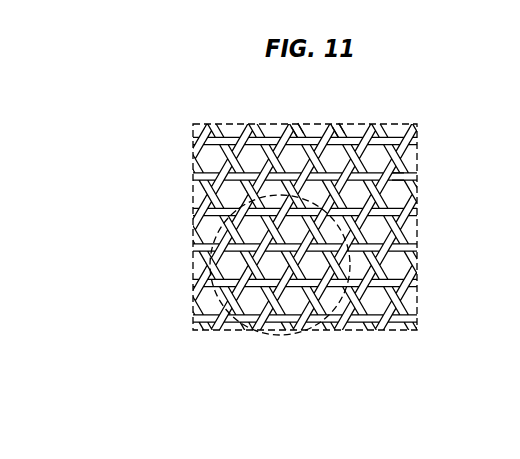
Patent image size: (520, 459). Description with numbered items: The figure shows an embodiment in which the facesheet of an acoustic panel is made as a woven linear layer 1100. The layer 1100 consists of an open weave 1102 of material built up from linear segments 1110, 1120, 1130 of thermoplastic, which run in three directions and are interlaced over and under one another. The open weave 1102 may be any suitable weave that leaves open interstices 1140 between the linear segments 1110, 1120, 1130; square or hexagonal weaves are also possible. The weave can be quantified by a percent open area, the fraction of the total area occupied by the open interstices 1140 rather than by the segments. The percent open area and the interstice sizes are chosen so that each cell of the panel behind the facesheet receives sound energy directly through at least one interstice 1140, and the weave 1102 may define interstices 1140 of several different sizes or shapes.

The woven linear layer 1100 is at (138, 246).
The open weave 1102 is at (289, 341).
The linear segment 1110 is at (413, 231).
The linear segment 1120 is at (300, 124).
The linear segment 1130 is at (349, 130).
The open interstice 1140 is at (394, 186).